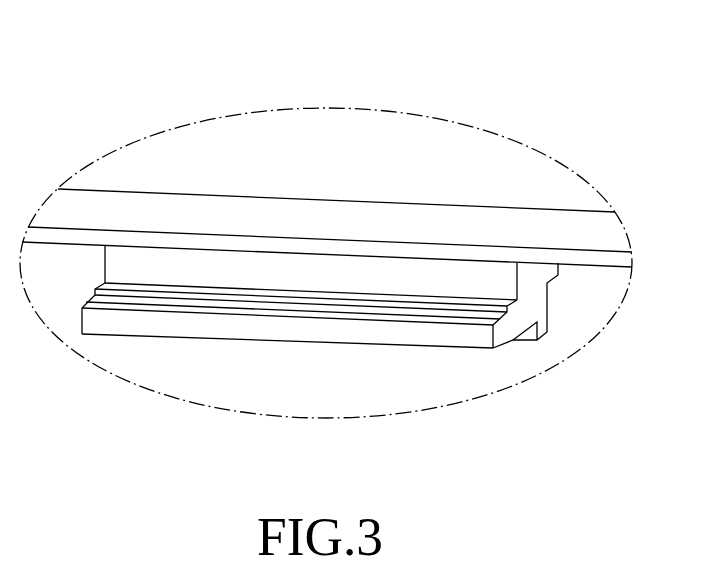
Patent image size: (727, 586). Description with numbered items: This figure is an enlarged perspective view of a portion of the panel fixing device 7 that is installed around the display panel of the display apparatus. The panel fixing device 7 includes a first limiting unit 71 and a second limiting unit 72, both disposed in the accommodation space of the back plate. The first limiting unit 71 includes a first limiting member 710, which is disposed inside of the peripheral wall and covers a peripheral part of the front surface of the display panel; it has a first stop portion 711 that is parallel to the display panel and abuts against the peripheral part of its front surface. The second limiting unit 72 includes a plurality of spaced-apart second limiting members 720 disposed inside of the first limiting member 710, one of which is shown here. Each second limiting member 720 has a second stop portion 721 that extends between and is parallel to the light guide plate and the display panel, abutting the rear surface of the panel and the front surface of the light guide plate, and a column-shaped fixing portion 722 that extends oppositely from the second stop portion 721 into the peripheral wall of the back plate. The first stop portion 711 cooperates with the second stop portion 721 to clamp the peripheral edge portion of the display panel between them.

The panel fixing device 7 is at (327, 145).
The first limiting unit 71 is at (479, 200).
The first limiting member 710 is at (304, 194).
The first stop portion 711 is at (222, 207).
The second limiting unit 72 is at (372, 364).
The second limiting member 720 is at (408, 352).
The second stop portion 721 is at (137, 327).
The fixing portion 722 is at (549, 266).